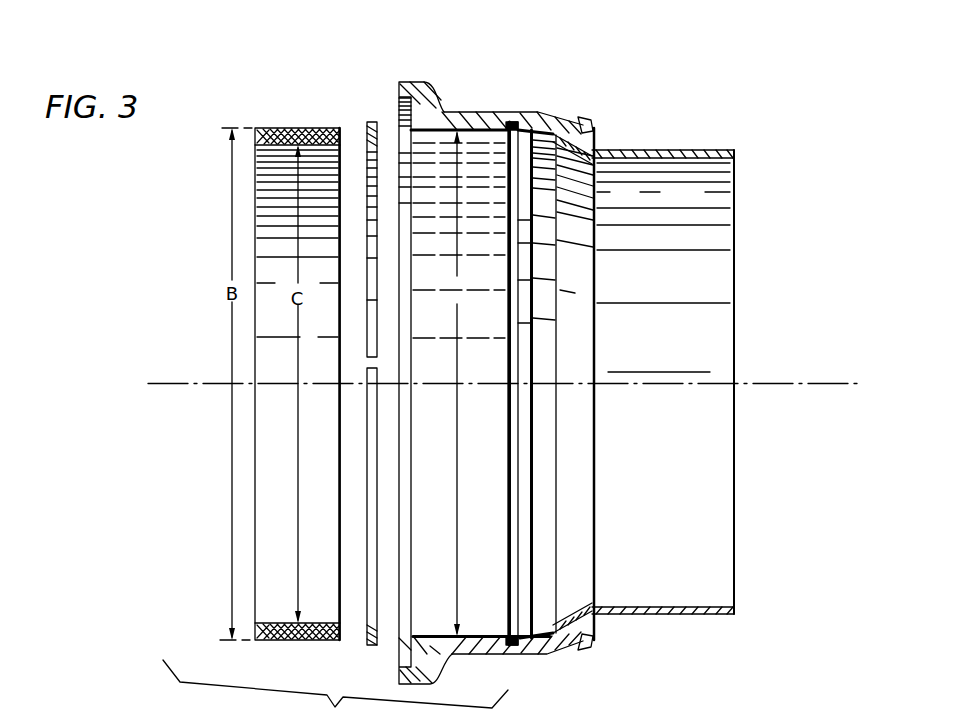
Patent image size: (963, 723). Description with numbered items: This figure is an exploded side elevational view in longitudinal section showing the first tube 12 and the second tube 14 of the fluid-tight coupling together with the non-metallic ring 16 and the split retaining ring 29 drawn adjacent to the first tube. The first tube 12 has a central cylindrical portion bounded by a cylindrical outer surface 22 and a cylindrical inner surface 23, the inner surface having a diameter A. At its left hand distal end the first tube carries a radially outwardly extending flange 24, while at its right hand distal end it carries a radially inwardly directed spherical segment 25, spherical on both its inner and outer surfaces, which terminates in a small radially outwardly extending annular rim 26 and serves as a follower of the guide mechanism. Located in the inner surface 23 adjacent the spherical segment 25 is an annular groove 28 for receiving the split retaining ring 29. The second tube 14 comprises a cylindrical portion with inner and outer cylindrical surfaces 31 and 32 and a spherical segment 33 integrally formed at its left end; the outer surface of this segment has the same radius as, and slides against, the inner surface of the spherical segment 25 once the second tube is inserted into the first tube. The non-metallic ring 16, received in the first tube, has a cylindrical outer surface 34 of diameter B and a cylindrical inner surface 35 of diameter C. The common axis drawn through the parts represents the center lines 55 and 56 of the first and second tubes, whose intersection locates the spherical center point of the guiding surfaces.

The first tube 12 is at (513, 360).
The second tube 14 is at (663, 355).
The non-metallic ring 16 is at (264, 354).
The cylindrical outer surface 22 is at (491, 360).
The cylindrical inner surface 23 is at (420, 133).
The flange 24 is at (420, 81).
The spherical segment 25 is at (551, 114).
The annular rim 26 is at (588, 120).
The annular groove 28 is at (508, 243).
The split retaining ring 29 is at (367, 123).
The inner cylindrical surface 31 is at (633, 149).
The outer cylindrical surface 32 is at (680, 160).
The spherical segment 33 is at (593, 175).
The cylindrical outer surface 34 is at (272, 128).
The cylindrical inner surface 35 is at (277, 144).
The center line 55 is at (507, 354).
The center line 56 is at (793, 383).